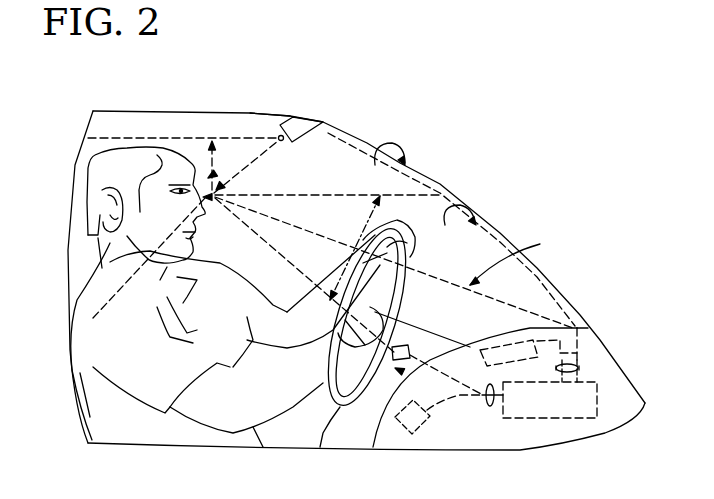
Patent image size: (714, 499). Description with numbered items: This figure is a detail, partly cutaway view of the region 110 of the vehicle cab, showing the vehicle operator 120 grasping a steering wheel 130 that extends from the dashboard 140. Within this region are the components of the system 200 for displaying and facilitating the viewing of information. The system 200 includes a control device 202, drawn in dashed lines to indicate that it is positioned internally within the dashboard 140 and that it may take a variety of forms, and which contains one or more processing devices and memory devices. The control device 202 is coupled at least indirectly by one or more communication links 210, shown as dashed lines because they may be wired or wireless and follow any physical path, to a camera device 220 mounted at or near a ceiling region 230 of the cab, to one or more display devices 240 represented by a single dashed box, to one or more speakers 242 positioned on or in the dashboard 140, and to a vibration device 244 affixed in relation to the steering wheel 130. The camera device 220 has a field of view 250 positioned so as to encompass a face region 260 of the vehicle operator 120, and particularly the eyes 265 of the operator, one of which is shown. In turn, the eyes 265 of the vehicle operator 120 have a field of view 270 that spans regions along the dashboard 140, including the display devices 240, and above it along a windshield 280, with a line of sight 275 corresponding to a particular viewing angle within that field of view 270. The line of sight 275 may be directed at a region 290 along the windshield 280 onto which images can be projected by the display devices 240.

The region 110 is at (217, 106).
The vehicle operator 120 is at (107, 418).
The steering wheel 130 is at (321, 450).
The dashboard 140 is at (588, 350).
The system 200 is at (472, 414).
The control device 202 is at (572, 420).
The communication links 210 is at (493, 407).
The camera device 220 is at (298, 124).
The ceiling region 230 is at (263, 113).
The display devices 240 is at (492, 333).
The speakers 242 is at (422, 434).
The vibration device 244 is at (400, 345).
The field of view 250 is at (207, 163).
The face region 260 is at (172, 244).
The eyes 265 is at (177, 176).
The field of view 270 is at (365, 232).
The line of sight 275 is at (394, 261).
The windshield 280 is at (390, 148).
The region 290 is at (462, 205).